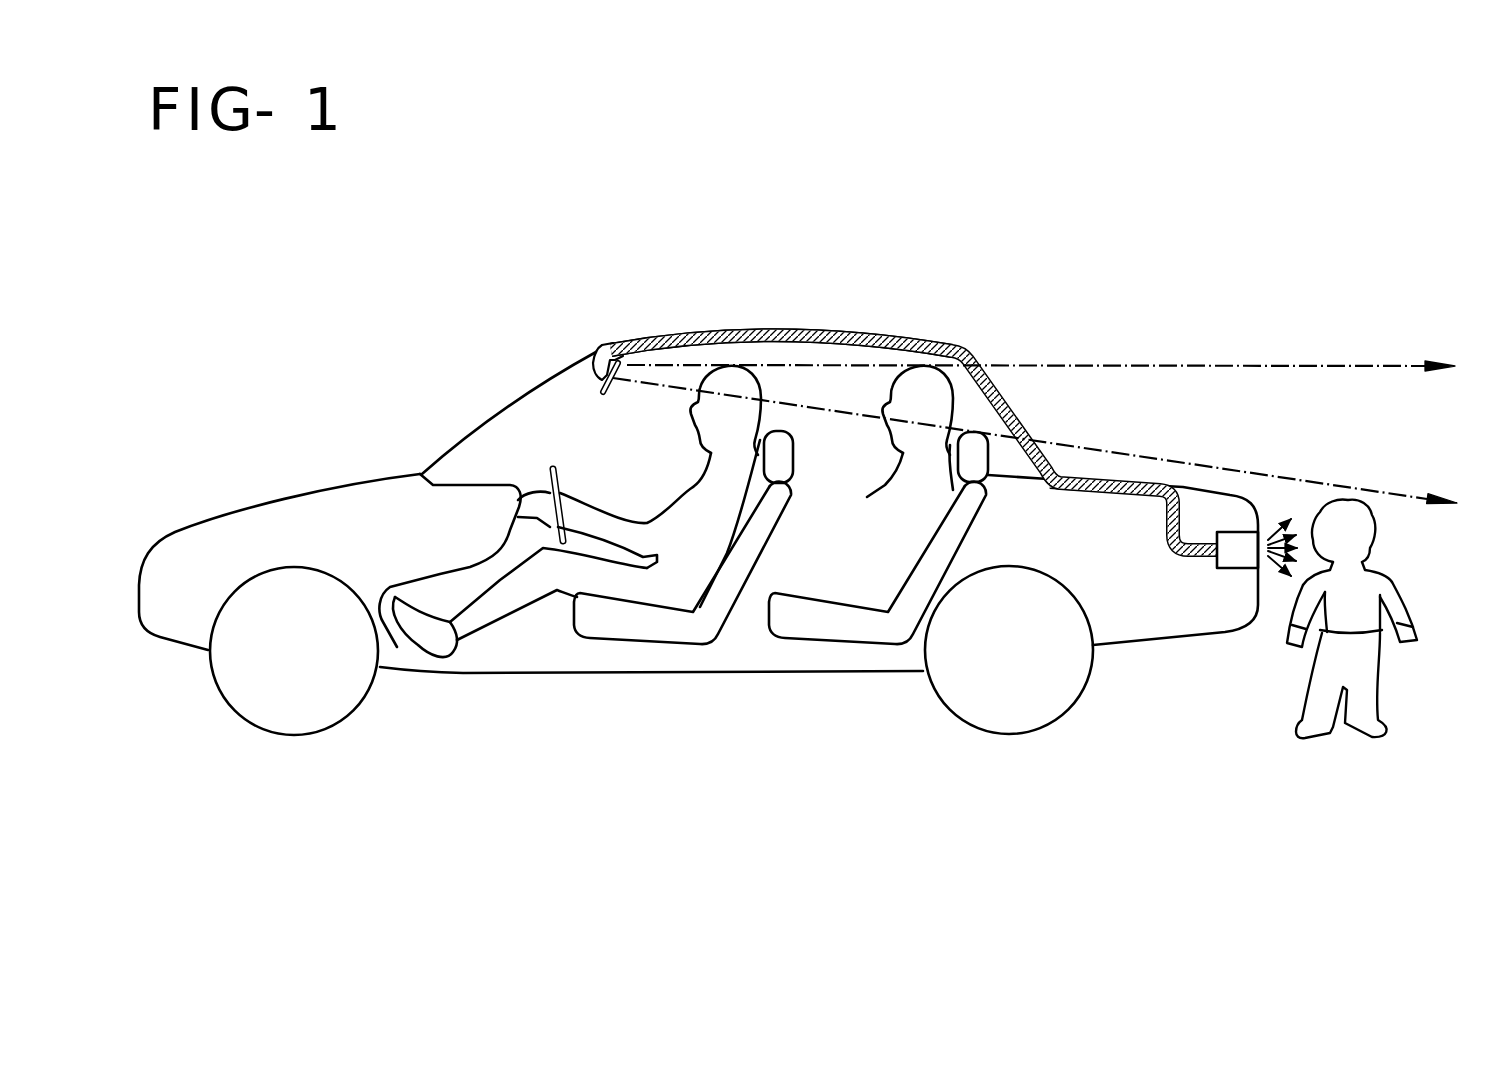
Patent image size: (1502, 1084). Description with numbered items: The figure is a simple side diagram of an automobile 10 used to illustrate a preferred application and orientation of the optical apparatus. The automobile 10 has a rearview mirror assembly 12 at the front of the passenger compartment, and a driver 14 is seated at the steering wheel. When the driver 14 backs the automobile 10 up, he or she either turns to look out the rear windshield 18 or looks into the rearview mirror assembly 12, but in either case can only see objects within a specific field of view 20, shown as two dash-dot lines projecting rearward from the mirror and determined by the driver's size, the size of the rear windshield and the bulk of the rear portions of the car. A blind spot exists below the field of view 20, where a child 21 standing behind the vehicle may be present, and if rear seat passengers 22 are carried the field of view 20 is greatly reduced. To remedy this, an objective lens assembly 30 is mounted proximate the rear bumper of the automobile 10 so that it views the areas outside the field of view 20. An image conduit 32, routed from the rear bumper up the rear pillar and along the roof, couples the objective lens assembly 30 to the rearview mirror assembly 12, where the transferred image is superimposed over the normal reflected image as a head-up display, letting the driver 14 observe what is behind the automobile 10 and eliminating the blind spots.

The automobile 10 is at (398, 420).
The rearview mirror assembly 12 is at (597, 370).
The driver 14 is at (697, 500).
The rear windshield 18 is at (1000, 392).
The field of view 20 is at (1247, 427).
The child 21 is at (1363, 673).
The rear seat passengers 22 is at (920, 387).
The objective lens assembly 30 is at (1230, 568).
The image conduit 32 is at (1120, 497).